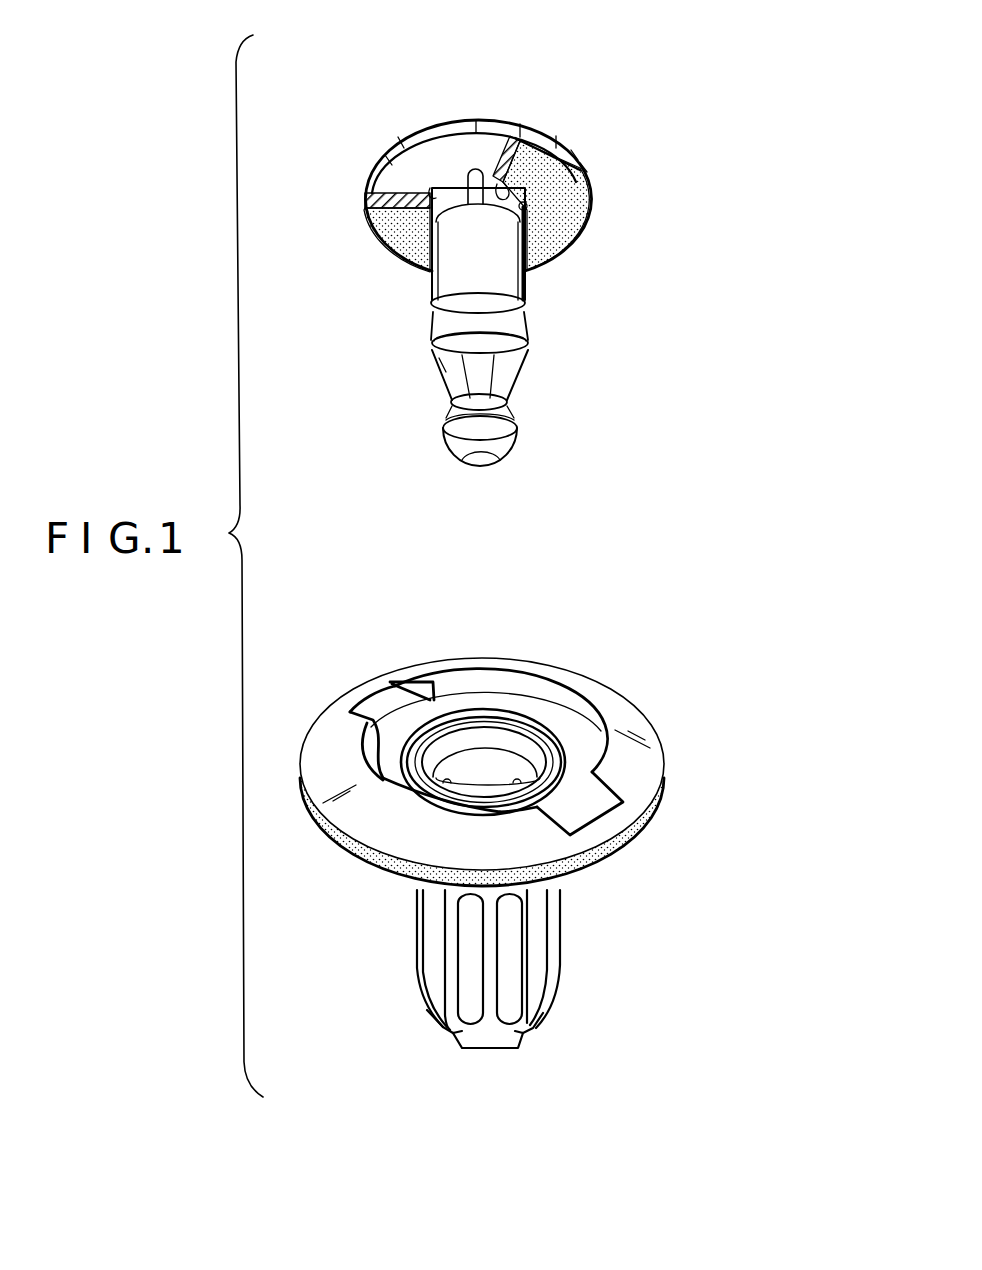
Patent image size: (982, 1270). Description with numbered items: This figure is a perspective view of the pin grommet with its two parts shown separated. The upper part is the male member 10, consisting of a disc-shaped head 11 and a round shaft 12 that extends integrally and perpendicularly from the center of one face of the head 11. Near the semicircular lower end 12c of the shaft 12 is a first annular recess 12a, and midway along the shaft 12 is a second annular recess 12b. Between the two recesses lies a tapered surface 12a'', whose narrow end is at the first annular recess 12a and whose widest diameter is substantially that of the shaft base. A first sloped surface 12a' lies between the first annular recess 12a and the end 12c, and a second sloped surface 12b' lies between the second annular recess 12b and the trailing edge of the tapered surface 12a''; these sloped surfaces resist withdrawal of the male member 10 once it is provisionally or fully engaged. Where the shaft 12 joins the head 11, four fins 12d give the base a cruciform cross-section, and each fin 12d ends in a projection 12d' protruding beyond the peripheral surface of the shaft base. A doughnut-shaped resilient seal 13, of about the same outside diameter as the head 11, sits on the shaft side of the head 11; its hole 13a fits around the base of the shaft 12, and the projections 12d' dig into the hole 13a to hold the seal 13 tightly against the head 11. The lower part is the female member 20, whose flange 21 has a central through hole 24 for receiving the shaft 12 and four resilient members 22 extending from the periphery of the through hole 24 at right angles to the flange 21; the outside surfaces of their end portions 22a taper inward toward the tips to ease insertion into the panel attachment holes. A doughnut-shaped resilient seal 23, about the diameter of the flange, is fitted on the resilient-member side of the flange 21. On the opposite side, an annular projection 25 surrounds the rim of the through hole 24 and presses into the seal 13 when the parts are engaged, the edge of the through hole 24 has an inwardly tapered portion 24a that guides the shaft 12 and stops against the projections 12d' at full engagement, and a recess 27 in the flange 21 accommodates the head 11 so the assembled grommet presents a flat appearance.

The male member 10 is at (580, 123).
The head 11 is at (577, 162).
The shaft 12 is at (520, 290).
The first annular recess 12a is at (529, 436).
The first sloped surface 12a' is at (427, 439).
The tapered surface 12a'' is at (393, 383).
The second annular recess 12b is at (516, 373).
The second sloped surface 12b' is at (545, 357).
The lower end 12c is at (487, 454).
The fins 12d is at (489, 186).
The projections 12d' is at (444, 127).
The seal 13 is at (587, 199).
The hole 13a is at (499, 196).
The female member 20 is at (672, 700).
The flange 21 is at (657, 760).
The resilient members 22 is at (417, 970).
The leg end portions 22a is at (430, 1007).
The seal 23 is at (663, 830).
The through hole 24 is at (505, 772).
The tapered portion 24a is at (497, 733).
The annular projection 25 is at (462, 712).
The recess 27 is at (390, 770).